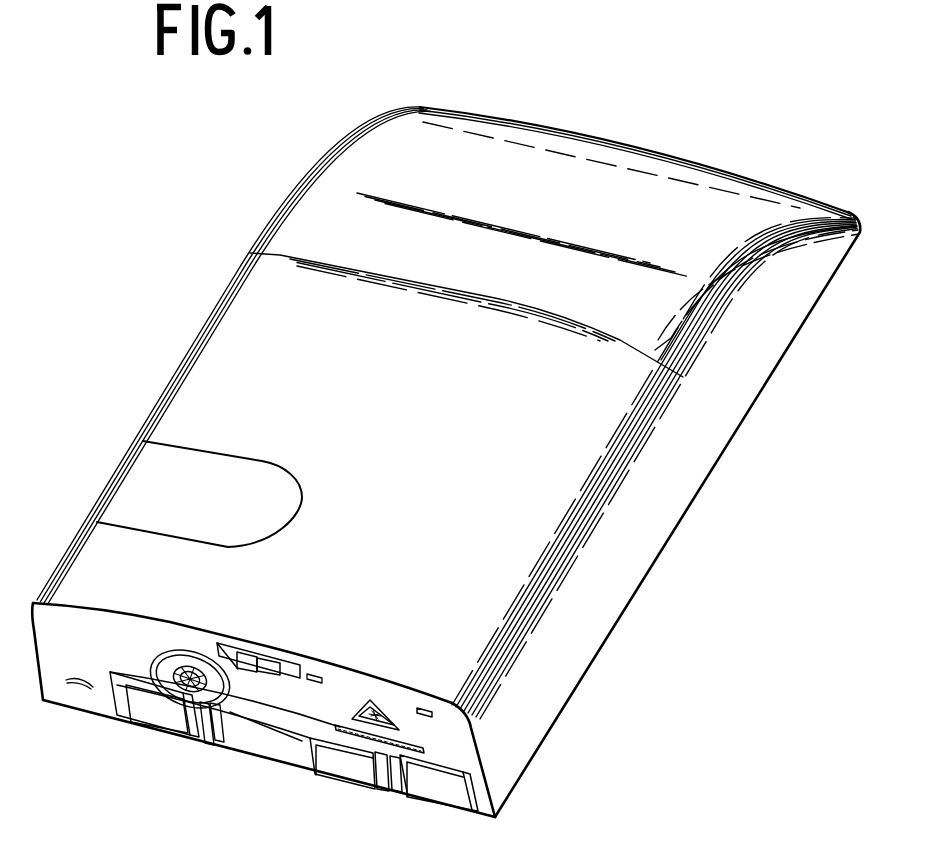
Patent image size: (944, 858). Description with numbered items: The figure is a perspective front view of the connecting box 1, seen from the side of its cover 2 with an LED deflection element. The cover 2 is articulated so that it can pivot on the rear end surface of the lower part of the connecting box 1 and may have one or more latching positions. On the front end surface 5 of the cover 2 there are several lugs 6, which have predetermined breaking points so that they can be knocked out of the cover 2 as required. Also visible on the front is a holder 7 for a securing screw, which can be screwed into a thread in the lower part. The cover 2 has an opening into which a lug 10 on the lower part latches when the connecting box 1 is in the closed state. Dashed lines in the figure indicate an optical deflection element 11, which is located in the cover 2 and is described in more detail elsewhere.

The connecting box 1 is at (252, 216).
The cover 2 is at (212, 364).
The front end surface 5 is at (57, 655).
The lugs 6 is at (153, 717).
The holder for a securing screw 7 is at (193, 744).
The lug 10 is at (263, 665).
The optical deflection element 11 is at (430, 718).